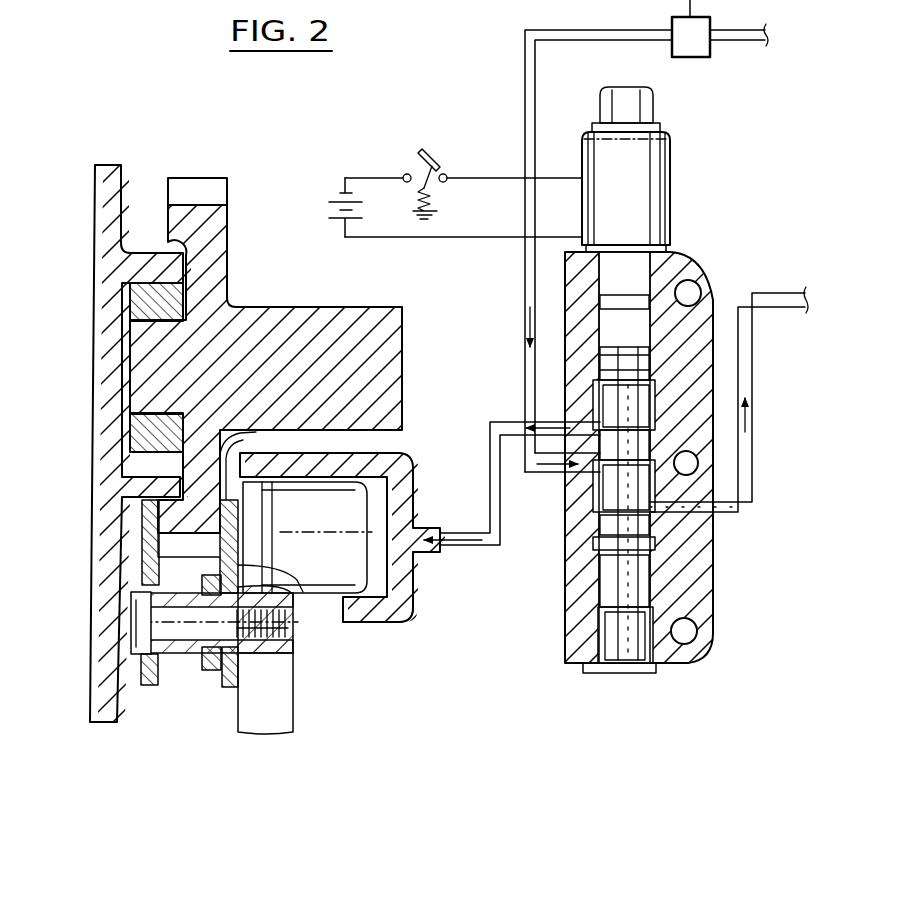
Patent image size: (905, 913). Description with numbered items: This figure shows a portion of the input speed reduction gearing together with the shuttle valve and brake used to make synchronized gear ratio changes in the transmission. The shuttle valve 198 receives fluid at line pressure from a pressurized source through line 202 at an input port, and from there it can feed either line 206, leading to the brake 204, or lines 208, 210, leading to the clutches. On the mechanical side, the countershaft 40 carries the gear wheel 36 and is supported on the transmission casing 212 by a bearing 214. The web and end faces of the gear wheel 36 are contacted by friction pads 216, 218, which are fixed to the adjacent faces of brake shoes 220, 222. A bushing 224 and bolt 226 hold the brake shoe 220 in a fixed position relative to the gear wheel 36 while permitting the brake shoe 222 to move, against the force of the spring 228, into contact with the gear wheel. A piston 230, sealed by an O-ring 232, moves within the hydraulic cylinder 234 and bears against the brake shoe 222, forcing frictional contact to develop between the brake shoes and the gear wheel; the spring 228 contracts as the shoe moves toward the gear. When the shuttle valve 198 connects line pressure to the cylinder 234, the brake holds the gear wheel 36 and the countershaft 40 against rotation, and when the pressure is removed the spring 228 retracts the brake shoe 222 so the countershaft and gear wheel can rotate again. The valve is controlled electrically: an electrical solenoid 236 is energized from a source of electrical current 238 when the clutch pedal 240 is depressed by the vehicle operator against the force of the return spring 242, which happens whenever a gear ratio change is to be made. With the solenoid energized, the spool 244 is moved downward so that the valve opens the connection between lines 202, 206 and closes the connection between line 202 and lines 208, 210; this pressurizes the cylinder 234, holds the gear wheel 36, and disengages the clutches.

The gear wheel 36 is at (228, 226).
The countershaft 40 is at (378, 287).
The shuttle valve 198 is at (714, 208).
The line 202 is at (524, 94).
The brake 204 is at (446, 568).
The line 206 is at (503, 420).
The line 208 is at (732, 524).
The line 210 is at (720, 547).
The transmission casing 212 is at (122, 170).
The bearing 214 is at (186, 294).
The friction pad 216 is at (143, 530).
The friction pad 218 is at (237, 453).
The brake shoe 220 is at (138, 612).
The brake shoe 222 is at (293, 594).
The bushing 224 is at (187, 657).
The bolt 226 is at (133, 640).
The spring 228 is at (207, 660).
The piston 230 is at (348, 520).
The O-ring 232 is at (292, 470).
The hydraulic cylinder 234 is at (398, 612).
The electrical solenoid 236 is at (670, 156).
The source of electrical current 238 is at (338, 190).
The clutch pedal 240 is at (440, 150).
The return spring 242 is at (432, 211).
The spool 244 is at (638, 408).